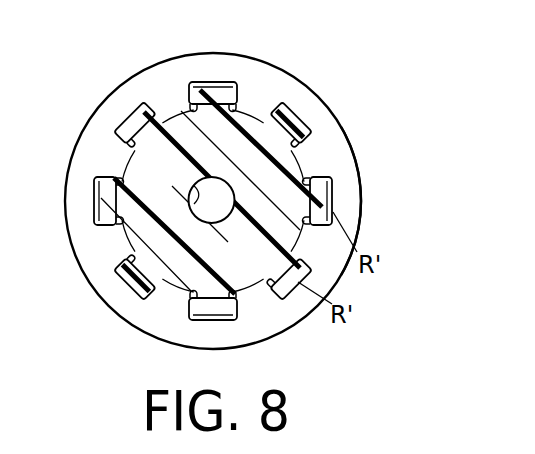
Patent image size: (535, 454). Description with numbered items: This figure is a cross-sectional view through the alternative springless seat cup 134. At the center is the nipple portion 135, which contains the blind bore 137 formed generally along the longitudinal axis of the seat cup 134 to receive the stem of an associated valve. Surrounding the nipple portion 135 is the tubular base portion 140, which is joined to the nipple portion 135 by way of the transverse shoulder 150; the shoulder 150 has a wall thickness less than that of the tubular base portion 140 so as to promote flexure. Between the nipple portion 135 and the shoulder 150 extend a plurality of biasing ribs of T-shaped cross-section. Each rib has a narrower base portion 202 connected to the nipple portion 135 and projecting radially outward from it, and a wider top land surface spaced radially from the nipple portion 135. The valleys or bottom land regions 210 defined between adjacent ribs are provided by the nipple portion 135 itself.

The seat cup 134 is at (305, 68).
The tubular base portion 140 is at (356, 143).
The shoulder 150 is at (203, 66).
The bottom land regions 210 is at (167, 101).
The base portion 202 is at (259, 100).
The nipple portion 135 is at (176, 280).
The blind bore 137 is at (203, 194).